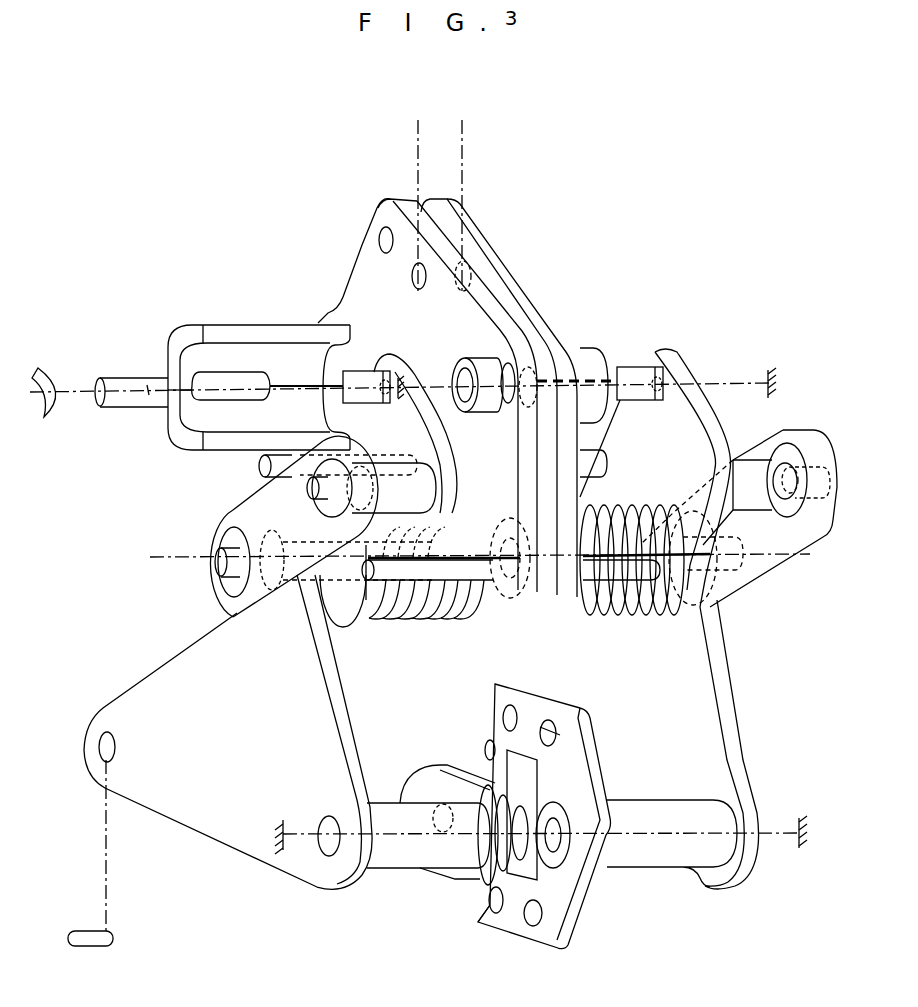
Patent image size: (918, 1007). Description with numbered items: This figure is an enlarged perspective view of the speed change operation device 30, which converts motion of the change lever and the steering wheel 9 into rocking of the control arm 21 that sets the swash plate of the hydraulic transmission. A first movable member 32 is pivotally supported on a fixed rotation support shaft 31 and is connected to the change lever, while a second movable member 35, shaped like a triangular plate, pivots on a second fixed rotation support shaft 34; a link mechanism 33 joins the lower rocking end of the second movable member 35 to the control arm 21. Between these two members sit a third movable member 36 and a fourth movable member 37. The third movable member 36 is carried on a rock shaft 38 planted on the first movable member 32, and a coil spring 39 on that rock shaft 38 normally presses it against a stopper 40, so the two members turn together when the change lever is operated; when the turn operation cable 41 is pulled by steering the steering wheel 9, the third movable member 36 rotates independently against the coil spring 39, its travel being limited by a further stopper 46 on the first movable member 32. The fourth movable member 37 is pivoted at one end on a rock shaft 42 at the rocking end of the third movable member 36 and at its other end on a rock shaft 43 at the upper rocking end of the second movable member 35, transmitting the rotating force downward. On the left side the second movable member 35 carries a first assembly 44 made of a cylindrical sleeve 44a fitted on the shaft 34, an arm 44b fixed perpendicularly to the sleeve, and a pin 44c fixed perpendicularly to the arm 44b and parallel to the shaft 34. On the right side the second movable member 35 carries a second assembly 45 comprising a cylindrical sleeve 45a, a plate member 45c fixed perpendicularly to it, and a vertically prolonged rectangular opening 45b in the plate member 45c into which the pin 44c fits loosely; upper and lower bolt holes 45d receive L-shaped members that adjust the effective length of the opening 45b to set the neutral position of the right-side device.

The steering wheel 9 is at (62, 380).
The control arm 21 is at (101, 947).
The speed change operation device 30 is at (314, 258).
The rotation support shaft 31 is at (452, 385).
The first movable member 32 is at (362, 250).
The link mechanism 33 is at (112, 847).
The rotation support shaft 34 is at (412, 840).
The second movable member 35 is at (230, 823).
The third movable member 36 is at (387, 357).
The fourth movable member 37 is at (257, 518).
The rock shaft 38 is at (343, 622).
The coil spring 39 is at (400, 615).
The stopper 40 is at (466, 610).
The turn operation cable 41 is at (125, 378).
The rock shaft 42 is at (312, 490).
The rock shaft 43 is at (218, 568).
The first assembly 44 is at (438, 888).
The cylindrical sleeve 44a is at (378, 857).
The arm 44b is at (417, 770).
The pin 44c is at (520, 880).
The second assembly 45 is at (620, 881).
The cylindrical sleeve 45a is at (672, 855).
The opening 45b is at (533, 773).
The plate member 45c is at (570, 917).
The bolt hole 45d is at (553, 730).
The stopper 46 is at (258, 466).